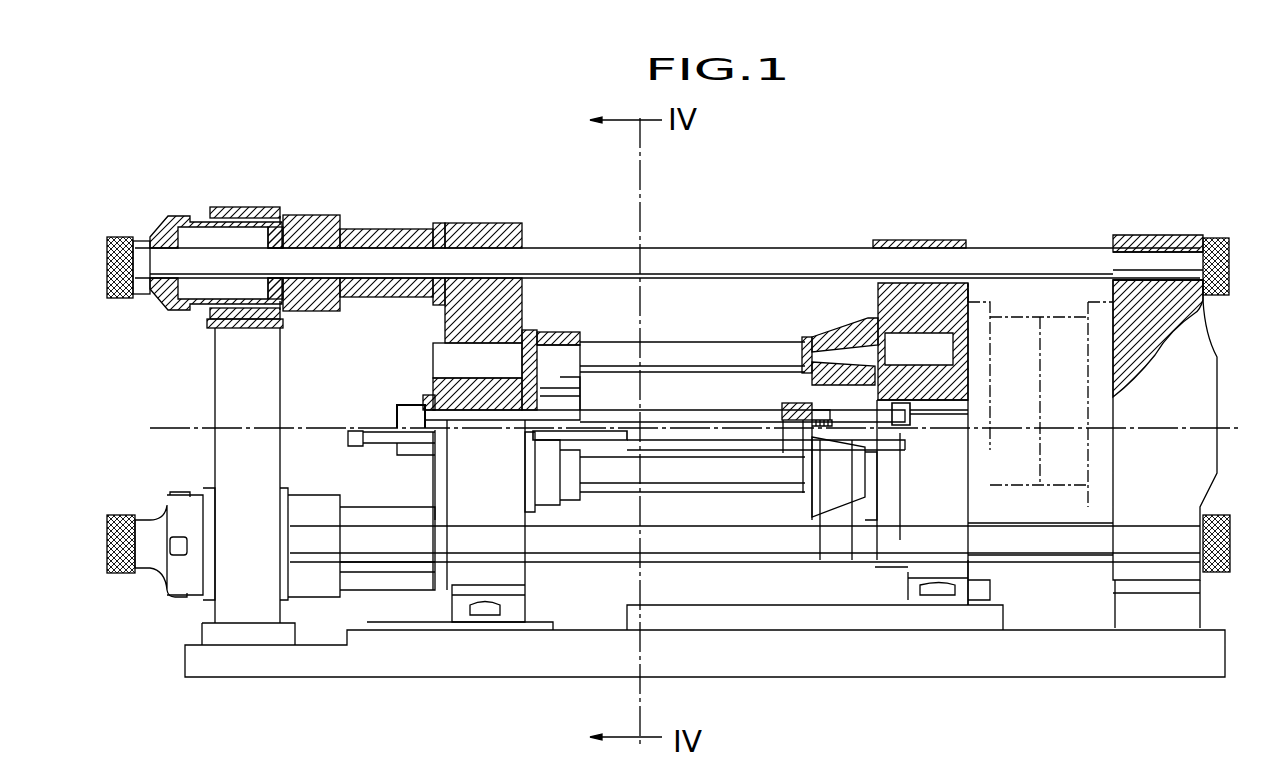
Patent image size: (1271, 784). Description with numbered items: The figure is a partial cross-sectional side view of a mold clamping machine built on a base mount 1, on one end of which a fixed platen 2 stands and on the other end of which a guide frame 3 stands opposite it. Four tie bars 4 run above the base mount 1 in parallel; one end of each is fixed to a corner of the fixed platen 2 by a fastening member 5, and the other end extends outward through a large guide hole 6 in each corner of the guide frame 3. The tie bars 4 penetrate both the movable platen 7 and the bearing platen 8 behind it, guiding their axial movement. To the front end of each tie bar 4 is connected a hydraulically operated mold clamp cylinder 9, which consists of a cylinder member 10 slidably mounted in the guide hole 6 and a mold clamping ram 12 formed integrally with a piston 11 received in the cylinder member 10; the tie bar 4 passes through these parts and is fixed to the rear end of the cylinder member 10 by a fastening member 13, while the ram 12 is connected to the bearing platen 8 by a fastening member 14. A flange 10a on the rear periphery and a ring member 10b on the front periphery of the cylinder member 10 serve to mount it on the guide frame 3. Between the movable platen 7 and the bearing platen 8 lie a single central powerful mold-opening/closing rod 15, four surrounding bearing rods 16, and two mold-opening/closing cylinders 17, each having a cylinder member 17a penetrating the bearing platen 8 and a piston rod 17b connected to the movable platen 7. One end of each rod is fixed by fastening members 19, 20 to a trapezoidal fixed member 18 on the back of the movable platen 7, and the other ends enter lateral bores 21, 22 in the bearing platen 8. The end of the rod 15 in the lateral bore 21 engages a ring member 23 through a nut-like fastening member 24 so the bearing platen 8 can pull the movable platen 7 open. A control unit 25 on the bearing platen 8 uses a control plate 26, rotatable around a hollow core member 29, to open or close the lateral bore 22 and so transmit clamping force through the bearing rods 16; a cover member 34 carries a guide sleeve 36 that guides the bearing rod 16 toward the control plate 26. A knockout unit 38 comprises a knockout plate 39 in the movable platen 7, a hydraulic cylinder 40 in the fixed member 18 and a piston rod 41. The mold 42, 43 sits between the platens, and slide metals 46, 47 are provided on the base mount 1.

The base mount 1 is at (420, 667).
The fixed platen 2 is at (1192, 373).
The guide frame 3 is at (225, 380).
The tie bars 4 is at (742, 262).
The fastening member 5 is at (1213, 238).
The guide hole 6 is at (232, 328).
The movable platen 7 is at (927, 240).
The bearing platen 8 is at (485, 223).
The mold clamp cylinder 9 is at (323, 210).
The cylinder member 10 is at (187, 215).
The flange 10a is at (205, 207).
The ring member 10b is at (283, 217).
The piston 11 is at (283, 237).
The mold clamping ram 12 is at (380, 227).
The fastening member 13 is at (120, 237).
The fastening member 14 is at (438, 225).
The powerful mold-opening/closing rod 15 is at (713, 427).
The bearing rods 16 is at (725, 343).
The mold-opening/closing cylinder 17 is at (607, 442).
The cylinder member 17a is at (412, 437).
The piston rod 17b is at (707, 457).
The fixed member 18 is at (822, 337).
The fastening member 19 is at (785, 403).
The fastening member 20 is at (802, 340).
The lateral bore 21 is at (465, 403).
The lateral bore 22 is at (457, 360).
The ring member 23 is at (427, 402).
The nut-like fastening member 24 is at (397, 410).
The control unit 25 is at (573, 402).
The control plate 26 is at (532, 343).
The hollow core member 29 is at (567, 377).
The cover member 34 is at (533, 492).
The guide sleeve 36 is at (567, 337).
The knockout unit 38 is at (923, 422).
The knockout plate 39 is at (903, 418).
The hydraulic cylinder 40 is at (830, 430).
The piston rod 41 is at (850, 430).
The mold 42 is at (1017, 333).
The mold 43 is at (1072, 333).
The slide metal 46 is at (943, 603).
The slide metal 47 is at (493, 627).